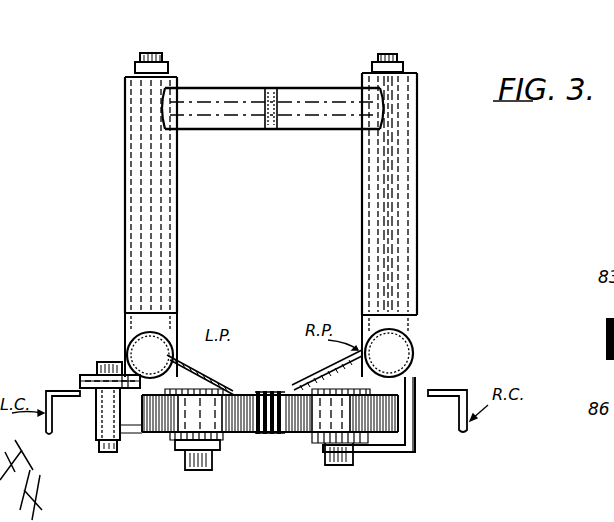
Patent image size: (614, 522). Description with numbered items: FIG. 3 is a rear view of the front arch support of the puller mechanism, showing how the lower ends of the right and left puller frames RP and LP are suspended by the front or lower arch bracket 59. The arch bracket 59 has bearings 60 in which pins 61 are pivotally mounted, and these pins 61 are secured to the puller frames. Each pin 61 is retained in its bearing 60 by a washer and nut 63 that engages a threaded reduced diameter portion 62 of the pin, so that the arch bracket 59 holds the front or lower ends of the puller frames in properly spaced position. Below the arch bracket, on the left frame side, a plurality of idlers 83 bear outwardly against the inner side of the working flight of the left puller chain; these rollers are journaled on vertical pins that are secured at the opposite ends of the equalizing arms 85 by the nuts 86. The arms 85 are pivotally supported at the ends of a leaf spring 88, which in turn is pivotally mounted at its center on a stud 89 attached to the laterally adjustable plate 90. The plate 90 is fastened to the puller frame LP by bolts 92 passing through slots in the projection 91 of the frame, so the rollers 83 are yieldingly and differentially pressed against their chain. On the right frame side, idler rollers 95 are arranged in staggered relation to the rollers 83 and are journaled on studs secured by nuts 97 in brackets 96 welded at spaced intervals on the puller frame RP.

The front arch bracket 59 is at (222, 93).
The bearings 60 is at (125, 247).
The pins 61 is at (418, 177).
The threaded reduced diameter portions 62 is at (397, 53).
The washer and nut 63 is at (375, 65).
The idlers 83 is at (220, 409).
The equalizing arms 85 is at (218, 453).
The nuts 86 is at (200, 468).
The leaf spring 88 is at (133, 418).
The stud 89 is at (107, 452).
The laterally adjustable plate 90 is at (82, 385).
The projection 91 is at (88, 375).
The bolts 92 is at (105, 361).
The idler rollers 95 is at (317, 408).
The brackets 96 is at (412, 452).
The nuts 97 is at (337, 465).